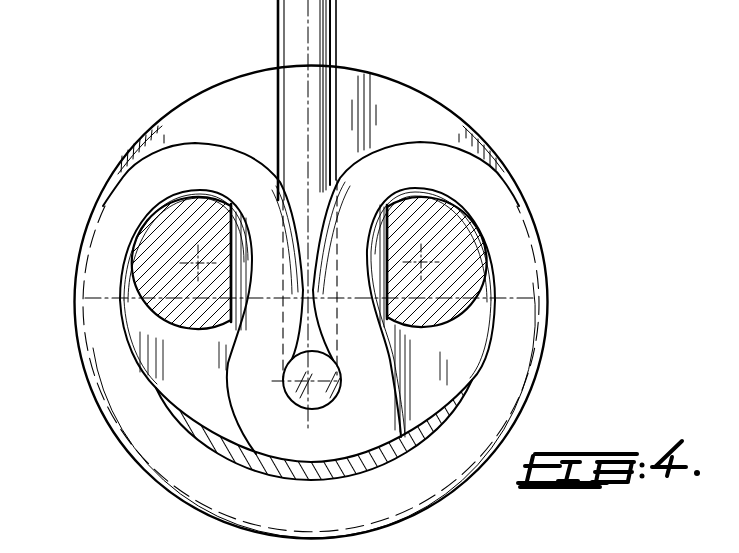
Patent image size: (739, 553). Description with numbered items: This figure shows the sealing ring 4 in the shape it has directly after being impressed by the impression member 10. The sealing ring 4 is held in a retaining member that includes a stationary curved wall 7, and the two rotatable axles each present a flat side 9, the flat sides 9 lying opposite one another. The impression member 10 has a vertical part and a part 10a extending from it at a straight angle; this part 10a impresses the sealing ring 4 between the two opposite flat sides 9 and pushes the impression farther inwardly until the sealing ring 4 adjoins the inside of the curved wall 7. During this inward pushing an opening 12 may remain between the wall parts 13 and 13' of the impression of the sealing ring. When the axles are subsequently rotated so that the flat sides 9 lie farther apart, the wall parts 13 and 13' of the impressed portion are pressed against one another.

The sealing ring 4 is at (430, 473).
The stationary curved wall 7 is at (190, 427).
The flat sides 9 is at (228, 232).
The impression member 10 is at (286, 28).
The part of impression member 10a is at (302, 388).
The opening 12 is at (307, 253).
The wall part of the impression 13 is at (152, 322).
The wall part of the impression 13' is at (463, 312).